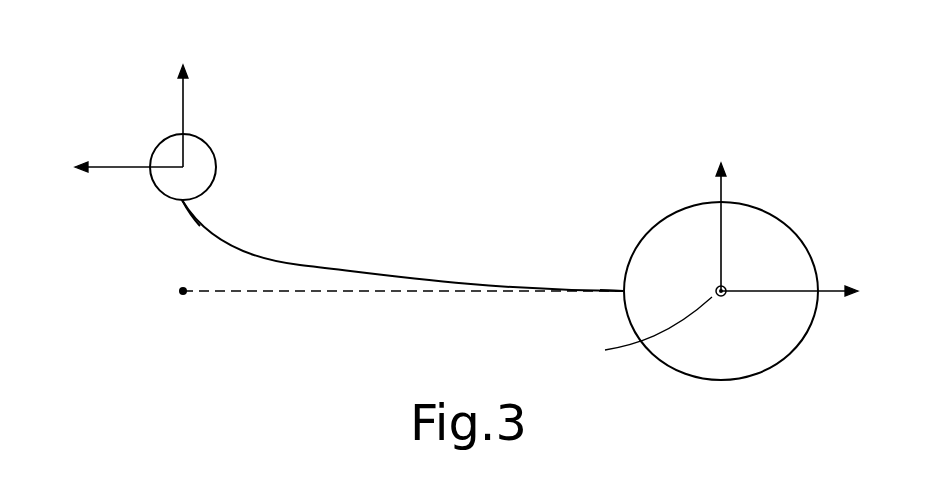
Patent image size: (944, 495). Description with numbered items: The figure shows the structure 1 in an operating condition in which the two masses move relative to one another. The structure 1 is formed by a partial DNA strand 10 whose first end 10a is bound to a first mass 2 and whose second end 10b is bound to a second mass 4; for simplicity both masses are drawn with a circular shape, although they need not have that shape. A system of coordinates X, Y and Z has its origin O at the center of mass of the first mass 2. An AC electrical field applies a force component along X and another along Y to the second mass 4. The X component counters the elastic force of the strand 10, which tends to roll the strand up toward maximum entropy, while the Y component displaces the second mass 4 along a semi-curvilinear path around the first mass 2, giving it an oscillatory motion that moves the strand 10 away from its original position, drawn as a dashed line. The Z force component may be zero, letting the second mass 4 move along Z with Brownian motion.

The structure 1 is at (380, 138).
The first mass 2 is at (705, 370).
The second mass 4 is at (165, 197).
The partial strand 10 is at (285, 260).
The first end 10a is at (623, 288).
The second end 10b is at (177, 203).